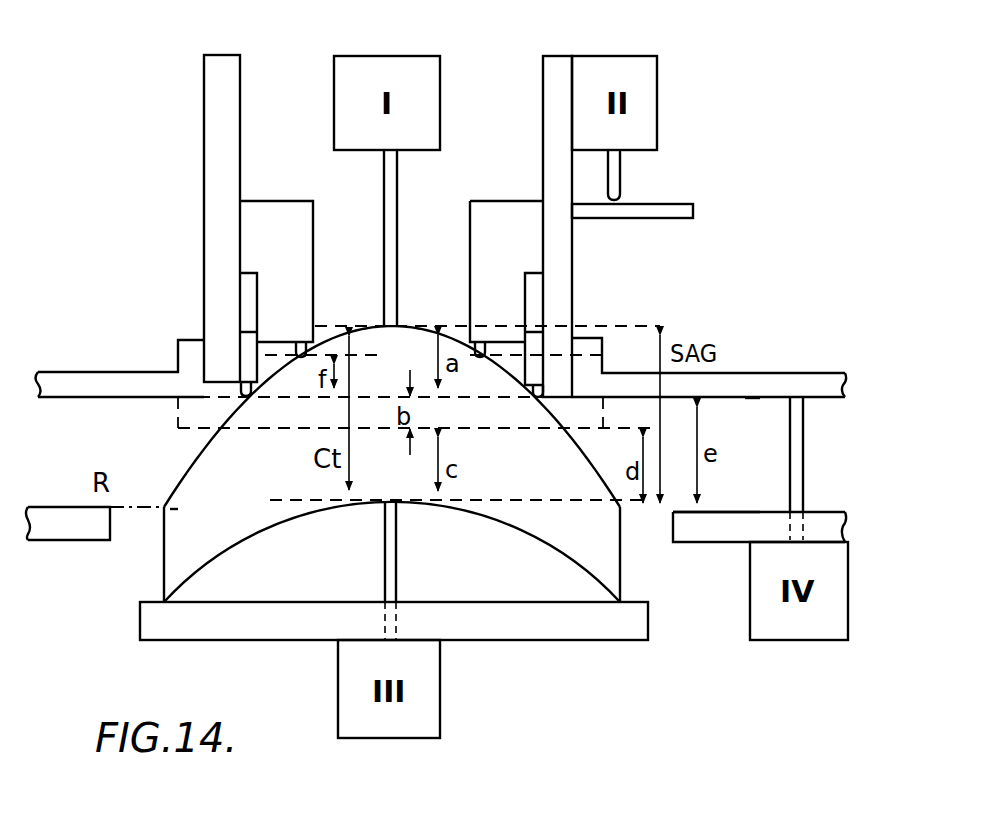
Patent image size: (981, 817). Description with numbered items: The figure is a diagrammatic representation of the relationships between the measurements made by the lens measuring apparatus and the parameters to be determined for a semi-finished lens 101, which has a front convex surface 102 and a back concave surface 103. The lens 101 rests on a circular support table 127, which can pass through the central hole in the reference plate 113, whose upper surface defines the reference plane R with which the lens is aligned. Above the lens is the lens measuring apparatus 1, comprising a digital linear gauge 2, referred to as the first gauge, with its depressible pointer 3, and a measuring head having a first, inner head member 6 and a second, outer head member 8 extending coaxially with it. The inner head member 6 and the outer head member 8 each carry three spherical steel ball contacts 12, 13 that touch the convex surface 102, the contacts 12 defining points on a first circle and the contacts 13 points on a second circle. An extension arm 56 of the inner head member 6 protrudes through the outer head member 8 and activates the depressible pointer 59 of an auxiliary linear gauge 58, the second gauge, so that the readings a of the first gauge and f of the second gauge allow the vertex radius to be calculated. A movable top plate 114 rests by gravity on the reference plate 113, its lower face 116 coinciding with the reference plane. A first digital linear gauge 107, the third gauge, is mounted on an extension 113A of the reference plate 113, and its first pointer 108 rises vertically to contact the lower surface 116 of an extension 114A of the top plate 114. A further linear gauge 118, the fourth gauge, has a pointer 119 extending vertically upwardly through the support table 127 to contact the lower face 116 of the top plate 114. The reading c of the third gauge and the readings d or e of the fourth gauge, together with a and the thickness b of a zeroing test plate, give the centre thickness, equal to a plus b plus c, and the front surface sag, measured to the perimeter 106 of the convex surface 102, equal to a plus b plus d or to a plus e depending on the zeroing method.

The lens measuring apparatus 1 is at (369, 226).
The digital linear gauge 2 is at (352, 56).
The depressible pointer 3 is at (397, 210).
The first head member 6 is at (288, 202).
The second head member 8 is at (204, 268).
The contacts 12 is at (301, 342).
The contacts 13 is at (245, 382).
The extension arm 56 is at (700, 211).
The auxiliary linear gauge 58 is at (660, 76).
The depressible pointer 59 is at (620, 175).
The semi-finished lens 101 is at (212, 538).
The front convex surface 102 is at (182, 478).
The back concave surface 103 is at (357, 464).
The perimeter 106 is at (178, 510).
The first digital linear gauge 107 is at (768, 641).
The first pointer 108 is at (803, 475).
The reference plate 113 is at (45, 540).
The extension of the reference plate 113A is at (773, 492).
The movable top plate 114 is at (60, 385).
The extension of the moveable top plate 114A is at (768, 372).
The lower face 116 is at (760, 402).
The further linear gauge 118 is at (442, 708).
The pointer 119 is at (397, 577).
The support table 127 is at (498, 641).